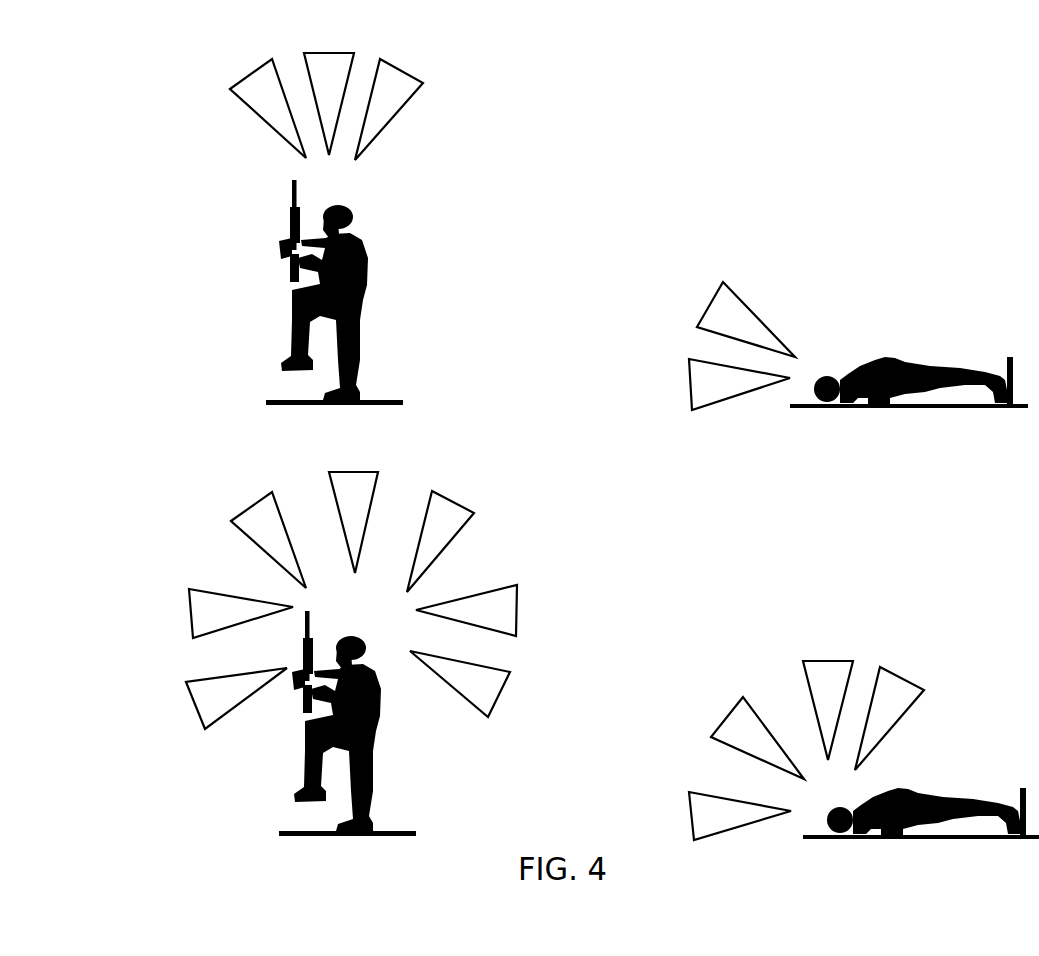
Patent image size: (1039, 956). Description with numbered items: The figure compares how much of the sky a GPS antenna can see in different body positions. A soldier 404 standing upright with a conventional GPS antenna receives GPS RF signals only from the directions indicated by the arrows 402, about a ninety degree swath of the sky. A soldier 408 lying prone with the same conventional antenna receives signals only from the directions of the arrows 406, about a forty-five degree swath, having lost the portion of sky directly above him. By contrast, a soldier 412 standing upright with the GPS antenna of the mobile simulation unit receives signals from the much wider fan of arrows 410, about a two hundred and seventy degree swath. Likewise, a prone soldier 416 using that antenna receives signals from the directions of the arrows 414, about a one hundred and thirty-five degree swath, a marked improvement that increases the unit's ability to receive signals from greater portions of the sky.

The arrows 402 is at (242, 65).
The soldier 404 is at (267, 344).
The arrows 406 is at (703, 307).
The soldier 408 is at (978, 344).
The arrows 410 is at (180, 586).
The soldier 412 is at (279, 802).
The arrows 414 is at (703, 711).
The soldier 416 is at (1003, 787).